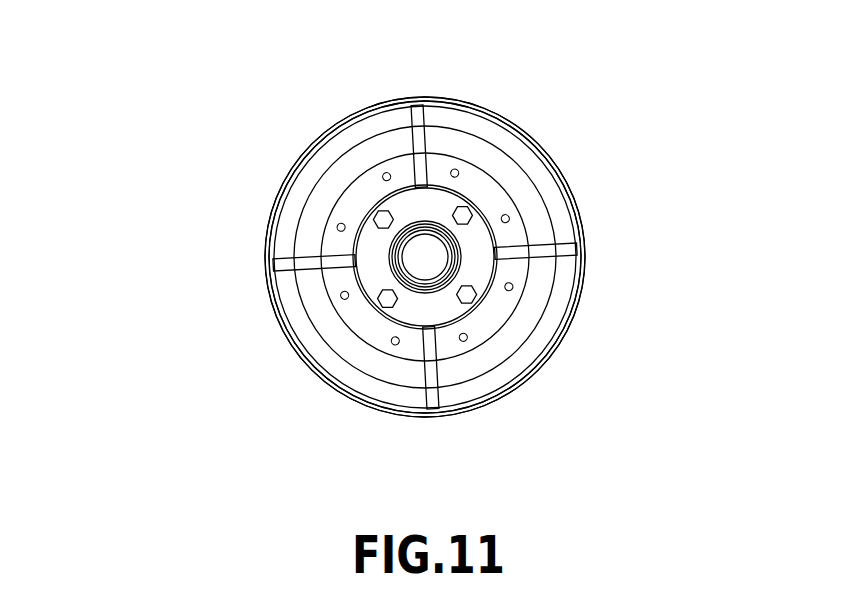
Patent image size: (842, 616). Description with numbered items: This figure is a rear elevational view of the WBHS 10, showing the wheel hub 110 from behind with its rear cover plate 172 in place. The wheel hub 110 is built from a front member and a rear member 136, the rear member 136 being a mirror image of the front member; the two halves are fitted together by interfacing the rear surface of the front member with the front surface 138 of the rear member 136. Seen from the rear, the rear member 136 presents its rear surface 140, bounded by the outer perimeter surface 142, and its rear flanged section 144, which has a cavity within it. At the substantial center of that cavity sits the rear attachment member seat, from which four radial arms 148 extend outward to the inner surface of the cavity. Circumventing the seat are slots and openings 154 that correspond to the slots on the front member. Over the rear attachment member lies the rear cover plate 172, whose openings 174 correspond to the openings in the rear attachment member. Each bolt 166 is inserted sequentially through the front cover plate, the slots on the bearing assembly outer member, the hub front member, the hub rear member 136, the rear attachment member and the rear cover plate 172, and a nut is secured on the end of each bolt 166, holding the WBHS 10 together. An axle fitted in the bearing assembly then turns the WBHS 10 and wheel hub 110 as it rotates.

The WBHS 10 is at (330, 228).
The wheel hub 110 is at (681, 231).
The rear member 136 is at (523, 257).
The front surface 138 is at (557, 148).
The rear surface 140 is at (518, 132).
The outer perimeter surface 142 is at (560, 345).
The rear flanged section 144 is at (544, 257).
The radial arms 148 is at (427, 112).
The openings 154 is at (422, 257).
The bolt 166 is at (472, 302).
The rear cover plate 172 is at (440, 308).
The openings 174 is at (357, 181).